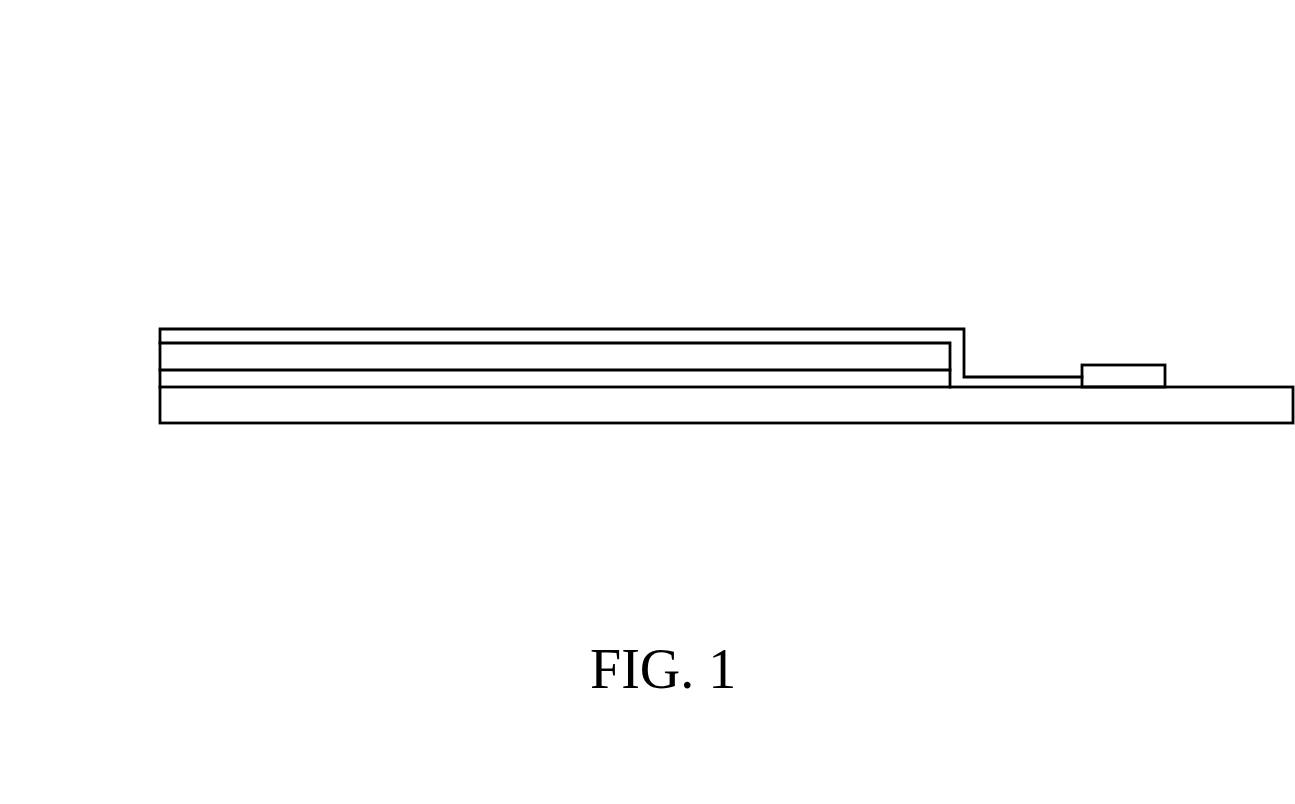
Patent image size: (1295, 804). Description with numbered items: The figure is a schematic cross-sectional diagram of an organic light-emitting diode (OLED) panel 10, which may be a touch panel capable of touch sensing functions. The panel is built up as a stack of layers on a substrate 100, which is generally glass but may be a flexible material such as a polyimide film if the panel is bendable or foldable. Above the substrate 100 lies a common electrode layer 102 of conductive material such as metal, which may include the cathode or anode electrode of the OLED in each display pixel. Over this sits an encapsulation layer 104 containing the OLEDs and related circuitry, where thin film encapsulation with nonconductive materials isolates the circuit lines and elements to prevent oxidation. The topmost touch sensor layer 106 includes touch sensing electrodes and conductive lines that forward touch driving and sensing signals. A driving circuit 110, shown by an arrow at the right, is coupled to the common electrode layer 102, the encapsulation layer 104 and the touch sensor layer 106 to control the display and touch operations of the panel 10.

The organic light-emitting diode (OLED) panel 10 is at (995, 102).
The substrate 100 is at (172, 403).
The common electrode layer 102 is at (173, 380).
The encapsulation layer 104 is at (172, 353).
The touch sensor layer 106 is at (170, 336).
The driving circuit 110 is at (1123, 365).